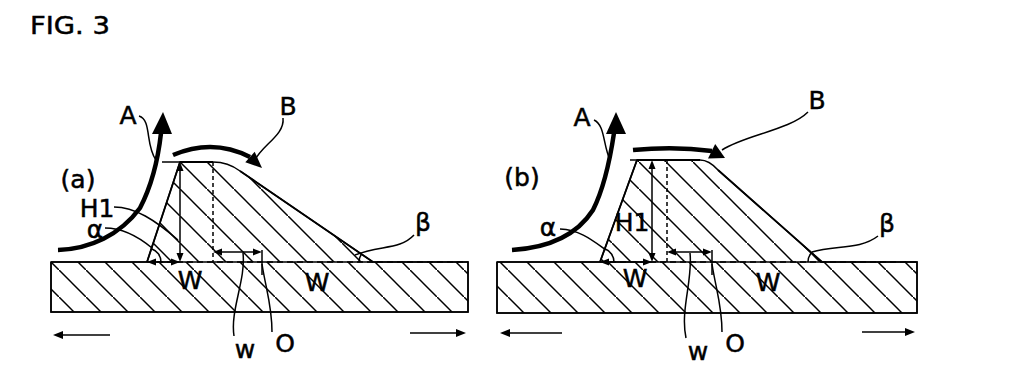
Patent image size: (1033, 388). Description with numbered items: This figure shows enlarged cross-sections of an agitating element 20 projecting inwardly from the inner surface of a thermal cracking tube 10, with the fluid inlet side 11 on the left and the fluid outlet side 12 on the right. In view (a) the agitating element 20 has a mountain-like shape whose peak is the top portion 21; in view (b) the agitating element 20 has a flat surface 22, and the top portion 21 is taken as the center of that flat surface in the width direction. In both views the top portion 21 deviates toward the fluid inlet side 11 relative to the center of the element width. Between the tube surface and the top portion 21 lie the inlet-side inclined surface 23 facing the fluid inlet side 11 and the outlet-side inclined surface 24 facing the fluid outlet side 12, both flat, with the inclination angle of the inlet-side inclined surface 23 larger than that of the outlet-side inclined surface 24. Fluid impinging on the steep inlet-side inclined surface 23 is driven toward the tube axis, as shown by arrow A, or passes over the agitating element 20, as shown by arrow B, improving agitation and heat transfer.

The thermal cracking tube 10 is at (450, 268).
The fluid inlet side 11 is at (325, 334).
The fluid outlet side 12 is at (645, 333).
The agitating element 20 is at (268, 218).
The top portion 21 is at (220, 152).
The flat surface 22 is at (658, 160).
The inlet-side inclined surface 23 is at (158, 226).
The outlet-side inclined surface 24 is at (320, 227).